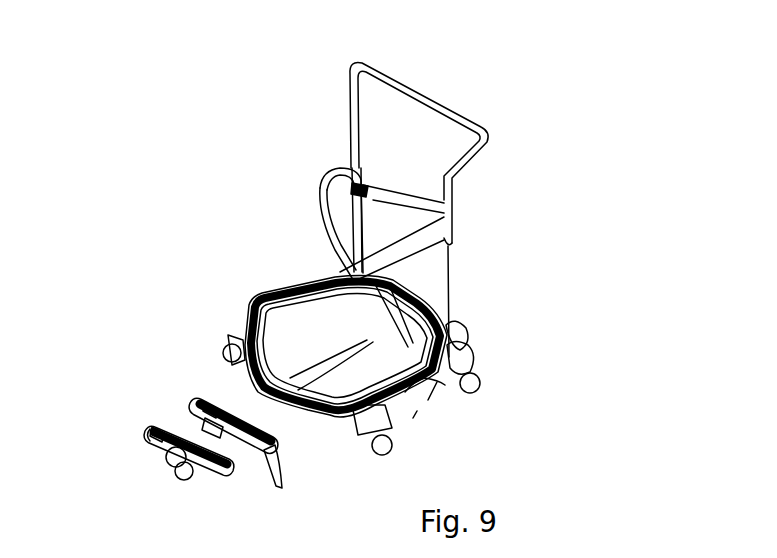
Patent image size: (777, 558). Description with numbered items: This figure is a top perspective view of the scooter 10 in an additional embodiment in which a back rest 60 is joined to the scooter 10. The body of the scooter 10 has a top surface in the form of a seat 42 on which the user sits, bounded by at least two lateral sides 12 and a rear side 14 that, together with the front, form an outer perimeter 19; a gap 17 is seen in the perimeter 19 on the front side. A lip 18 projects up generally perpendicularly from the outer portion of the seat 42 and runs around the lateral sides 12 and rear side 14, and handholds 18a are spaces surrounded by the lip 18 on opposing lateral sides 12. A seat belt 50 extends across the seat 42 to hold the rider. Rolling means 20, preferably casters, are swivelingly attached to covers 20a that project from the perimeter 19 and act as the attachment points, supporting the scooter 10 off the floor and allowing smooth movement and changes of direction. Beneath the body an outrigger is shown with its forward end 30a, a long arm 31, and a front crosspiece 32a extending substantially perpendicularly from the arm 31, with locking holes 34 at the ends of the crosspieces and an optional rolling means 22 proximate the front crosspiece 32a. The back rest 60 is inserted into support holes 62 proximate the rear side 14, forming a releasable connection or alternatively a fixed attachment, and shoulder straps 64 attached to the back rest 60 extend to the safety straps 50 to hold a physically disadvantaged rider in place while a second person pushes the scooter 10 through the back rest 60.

The scooter 10 is at (556, 323).
The lateral sides 12 is at (126, 109).
The rear side 14 is at (518, 196).
The gap 17 is at (234, 392).
The lip 18 is at (262, 286).
The handholds 18a is at (272, 290).
The outer perimeter 19 is at (413, 418).
The rolling means 20 is at (357, 478).
The covers 20a is at (237, 337).
The rolling means 22 is at (189, 481).
The forward end 30a is at (170, 462).
The long arm 31 is at (200, 430).
The front crosspiece 32a is at (158, 430).
The locking holes 34 is at (212, 405).
The seat 42 is at (319, 339).
The seat belt 50 is at (397, 340).
The back rest 60 is at (534, 56).
The support holes 62 is at (447, 322).
The shoulder straps 64 is at (352, 170).